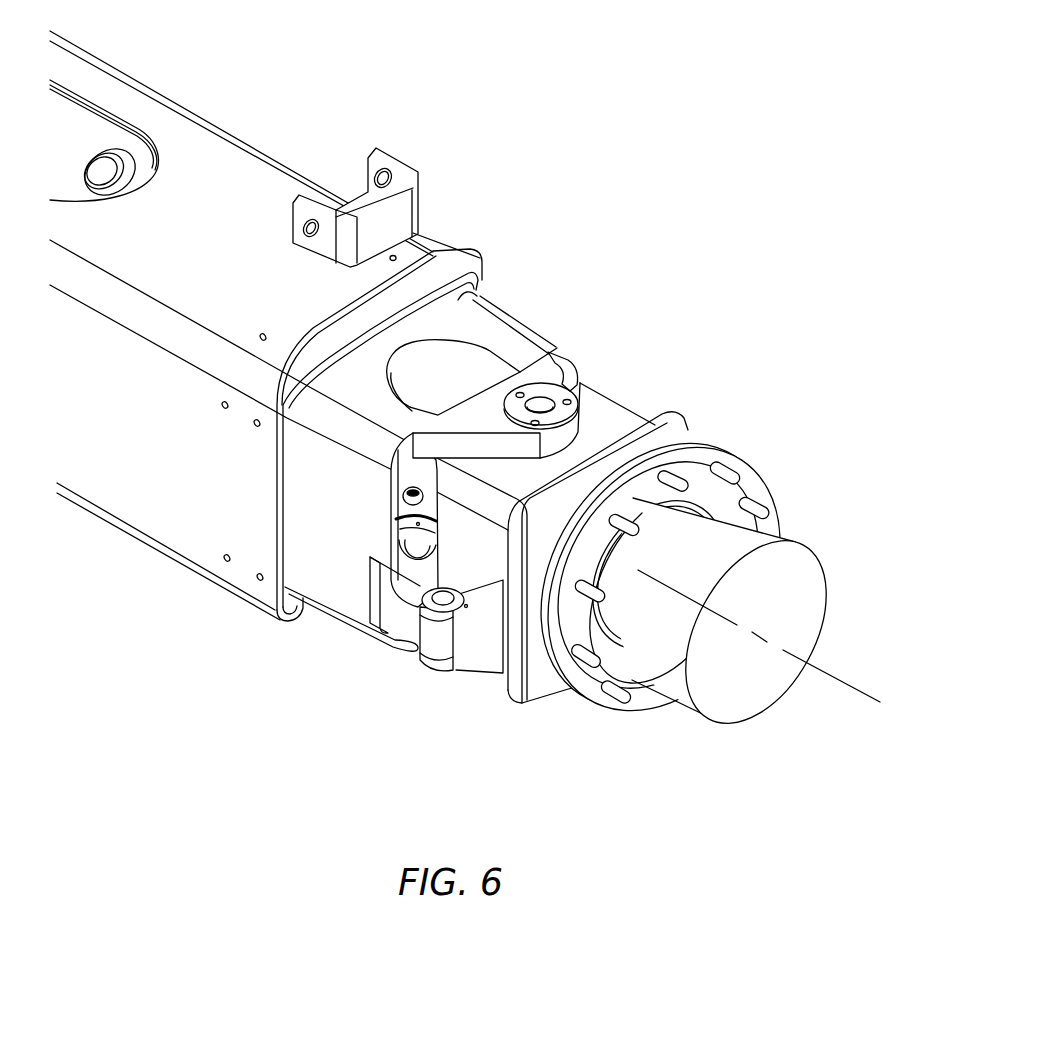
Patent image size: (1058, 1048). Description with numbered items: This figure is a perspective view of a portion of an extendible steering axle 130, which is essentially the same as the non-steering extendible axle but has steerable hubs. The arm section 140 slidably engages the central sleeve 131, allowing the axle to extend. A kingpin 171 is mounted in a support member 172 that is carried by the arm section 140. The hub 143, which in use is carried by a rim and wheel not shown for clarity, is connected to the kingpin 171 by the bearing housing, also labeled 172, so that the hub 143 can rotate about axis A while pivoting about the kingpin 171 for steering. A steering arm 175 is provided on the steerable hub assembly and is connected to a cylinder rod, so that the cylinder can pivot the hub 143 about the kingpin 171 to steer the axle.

The extendible steering axle 130 is at (257, 113).
The central sleeve 131 is at (275, 178).
The arm section 140 is at (512, 300).
The hub 143 is at (713, 440).
The kingpin 171 is at (552, 388).
The support member 172 is at (545, 370).
The steering arm 175 is at (443, 600).